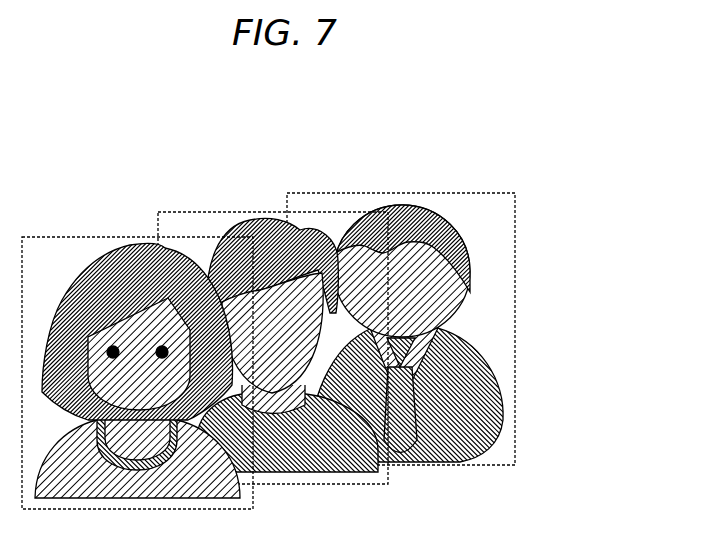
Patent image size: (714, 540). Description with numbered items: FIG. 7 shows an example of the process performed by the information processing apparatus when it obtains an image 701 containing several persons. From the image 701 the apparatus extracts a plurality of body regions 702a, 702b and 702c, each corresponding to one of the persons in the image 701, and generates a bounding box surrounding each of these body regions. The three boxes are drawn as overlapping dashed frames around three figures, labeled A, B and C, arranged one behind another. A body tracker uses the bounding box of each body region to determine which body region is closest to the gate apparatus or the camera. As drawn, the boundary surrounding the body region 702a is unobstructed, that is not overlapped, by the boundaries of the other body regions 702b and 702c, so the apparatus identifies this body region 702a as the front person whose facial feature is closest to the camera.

The image 701 is at (340, 270).
The body region 702a is at (85, 237).
The body region 702b is at (213, 212).
The body region 702c is at (355, 193).